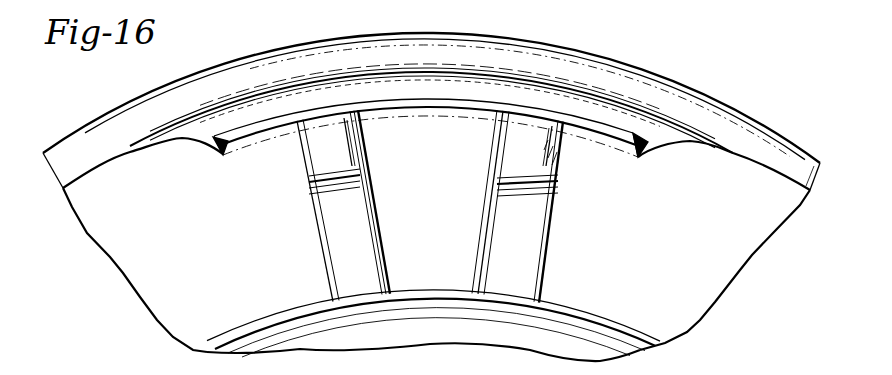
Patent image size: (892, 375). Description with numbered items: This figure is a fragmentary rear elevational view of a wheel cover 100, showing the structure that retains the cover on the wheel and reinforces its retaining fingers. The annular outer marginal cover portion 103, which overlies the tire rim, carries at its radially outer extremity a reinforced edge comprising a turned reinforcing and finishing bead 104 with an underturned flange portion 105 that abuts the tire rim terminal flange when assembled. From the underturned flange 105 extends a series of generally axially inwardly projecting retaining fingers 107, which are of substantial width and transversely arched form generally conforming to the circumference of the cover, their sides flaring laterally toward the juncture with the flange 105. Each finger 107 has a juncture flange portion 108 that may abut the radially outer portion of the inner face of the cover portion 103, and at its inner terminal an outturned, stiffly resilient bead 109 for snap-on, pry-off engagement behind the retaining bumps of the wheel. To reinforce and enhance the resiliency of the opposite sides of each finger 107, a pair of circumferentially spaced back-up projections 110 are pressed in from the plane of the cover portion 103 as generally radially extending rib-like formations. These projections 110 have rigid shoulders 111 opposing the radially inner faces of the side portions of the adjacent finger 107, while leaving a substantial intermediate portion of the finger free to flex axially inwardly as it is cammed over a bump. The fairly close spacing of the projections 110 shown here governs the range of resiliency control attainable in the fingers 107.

The wheel cover 100 is at (165, 336).
The outer marginal cover portion 103 is at (680, 303).
The reinforcing and finishing bead 104 is at (772, 127).
The underturned flange portion 105 is at (667, 100).
The retaining fingers 107 is at (636, 162).
The juncture flange portion 108 is at (590, 107).
The stiffly resilient bead 109 is at (433, 107).
The back-up projections 110 is at (364, 207).
The rigid shoulders 111 is at (336, 126).